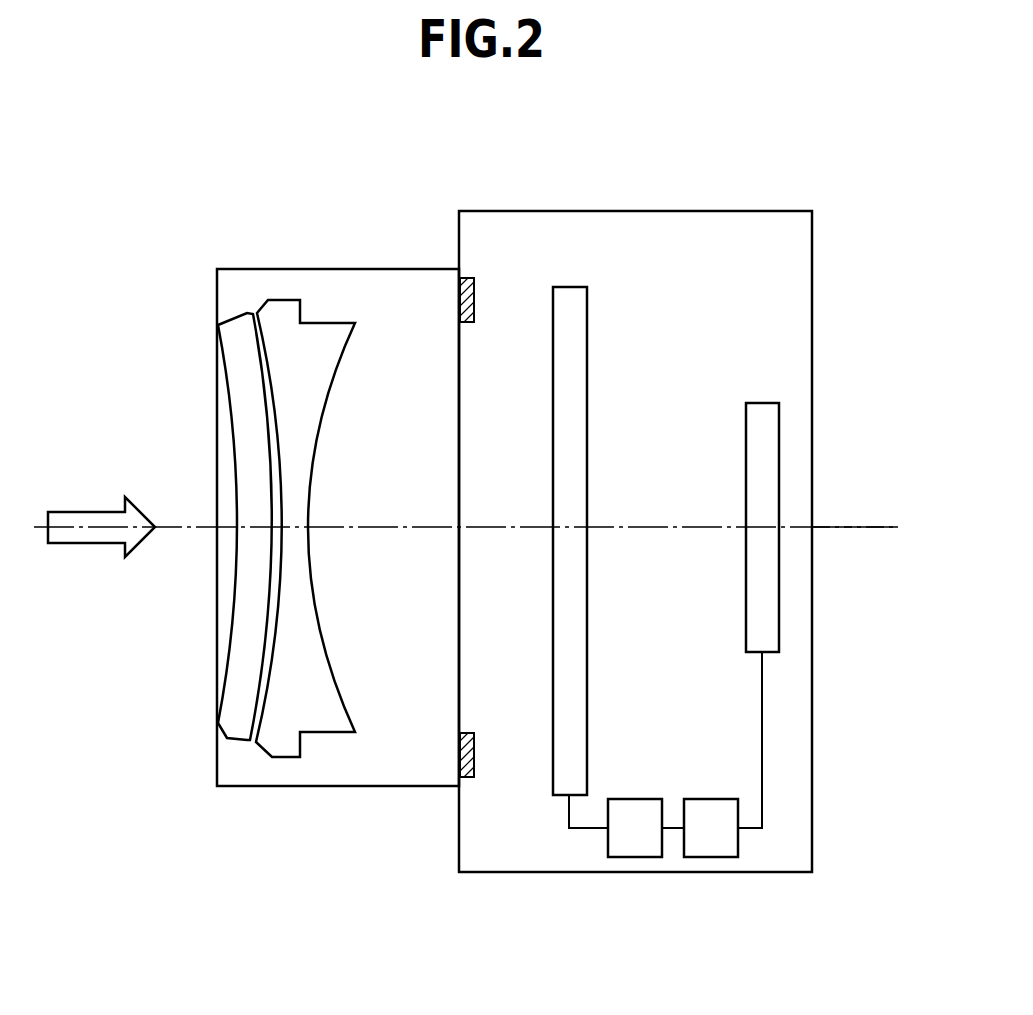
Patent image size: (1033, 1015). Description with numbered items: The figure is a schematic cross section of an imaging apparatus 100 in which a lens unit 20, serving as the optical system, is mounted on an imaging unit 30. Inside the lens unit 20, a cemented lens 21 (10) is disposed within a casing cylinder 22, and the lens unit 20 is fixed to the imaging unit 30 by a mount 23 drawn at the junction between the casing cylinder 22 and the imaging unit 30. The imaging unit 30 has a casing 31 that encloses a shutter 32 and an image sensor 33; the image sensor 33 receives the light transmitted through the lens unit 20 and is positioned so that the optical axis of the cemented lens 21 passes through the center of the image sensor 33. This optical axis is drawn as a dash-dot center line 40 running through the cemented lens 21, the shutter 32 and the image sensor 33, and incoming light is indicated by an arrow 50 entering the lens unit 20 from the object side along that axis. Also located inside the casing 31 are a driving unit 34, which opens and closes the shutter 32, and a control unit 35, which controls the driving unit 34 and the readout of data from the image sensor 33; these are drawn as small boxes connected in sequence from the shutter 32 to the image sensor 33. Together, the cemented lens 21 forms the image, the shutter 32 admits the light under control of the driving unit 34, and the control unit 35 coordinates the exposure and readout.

The imaging apparatus 100 is at (880, 293).
The lens unit 20 is at (330, 214).
The cemented lens 21 is at (326, 492).
The cemented lens 10 is at (286, 528).
The casing cylinder 22 is at (388, 269).
The mount 23 is at (475, 296).
The imaging unit 30 is at (758, 184).
The casing 31 is at (657, 211).
The shutter 32 is at (568, 287).
The image sensor 33 is at (762, 403).
The driving unit 34 is at (635, 799).
The control unit 35 is at (710, 799).
The optical axis 40 is at (868, 527).
The incident light 50 is at (88, 512).